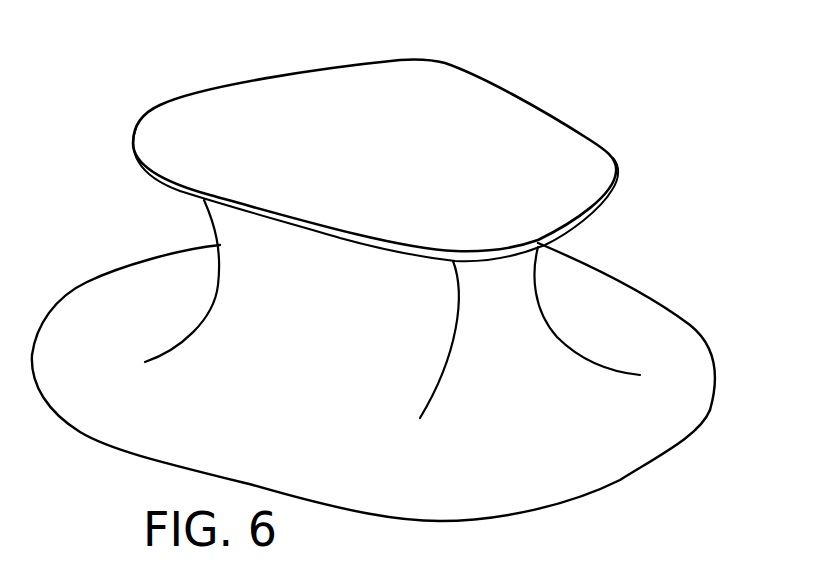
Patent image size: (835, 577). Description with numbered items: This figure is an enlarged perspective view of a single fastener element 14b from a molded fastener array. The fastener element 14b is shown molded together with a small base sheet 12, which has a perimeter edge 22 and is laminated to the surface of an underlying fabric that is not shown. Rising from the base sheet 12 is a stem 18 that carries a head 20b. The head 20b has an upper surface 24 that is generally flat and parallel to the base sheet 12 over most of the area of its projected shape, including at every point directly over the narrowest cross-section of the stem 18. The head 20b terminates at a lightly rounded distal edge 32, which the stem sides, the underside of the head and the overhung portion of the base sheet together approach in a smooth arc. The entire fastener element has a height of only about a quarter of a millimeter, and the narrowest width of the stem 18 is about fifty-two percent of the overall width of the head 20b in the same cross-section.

The fastener element 14b is at (116, 118).
The head 20b is at (490, 82).
The upper surface 24 is at (422, 186).
The distal edge 32 is at (617, 160).
The stem 18 is at (533, 282).
The base sheet 12 is at (665, 337).
The perimeter edge 22 is at (703, 423).